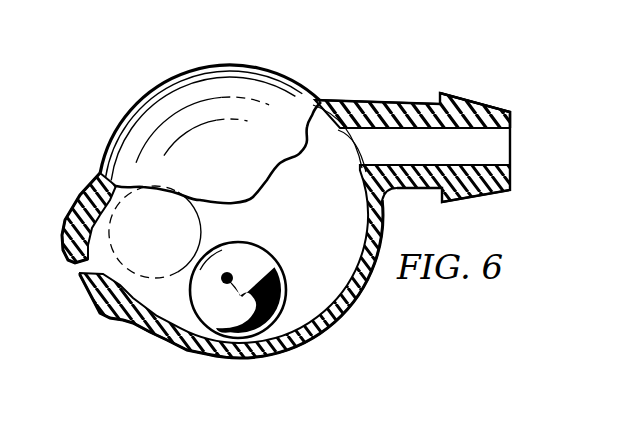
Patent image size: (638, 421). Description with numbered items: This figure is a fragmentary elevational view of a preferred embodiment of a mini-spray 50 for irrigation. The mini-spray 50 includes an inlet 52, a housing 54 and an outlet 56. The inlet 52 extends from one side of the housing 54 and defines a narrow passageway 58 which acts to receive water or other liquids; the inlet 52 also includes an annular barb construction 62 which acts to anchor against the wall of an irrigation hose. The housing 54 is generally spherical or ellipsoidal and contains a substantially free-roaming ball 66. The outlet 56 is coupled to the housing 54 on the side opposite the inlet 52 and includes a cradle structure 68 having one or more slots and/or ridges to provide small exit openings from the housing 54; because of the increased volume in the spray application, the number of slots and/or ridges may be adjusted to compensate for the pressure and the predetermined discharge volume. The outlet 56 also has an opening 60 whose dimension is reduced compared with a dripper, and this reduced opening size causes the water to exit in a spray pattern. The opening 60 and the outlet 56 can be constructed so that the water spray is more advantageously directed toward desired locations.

The mini-spray 50 is at (285, 199).
The inlet 52 is at (439, 113).
The housing 54 is at (290, 66).
The outlet 56 is at (64, 322).
The narrow passageway 58 is at (458, 156).
The opening 60 is at (66, 268).
The annular barb construction 62 is at (512, 116).
The ball 66 is at (261, 251).
The cradle structure 68 is at (117, 268).